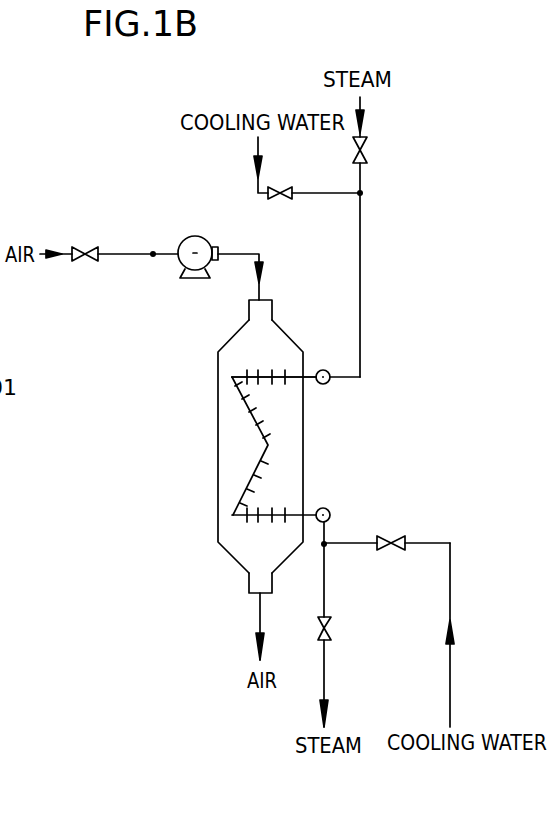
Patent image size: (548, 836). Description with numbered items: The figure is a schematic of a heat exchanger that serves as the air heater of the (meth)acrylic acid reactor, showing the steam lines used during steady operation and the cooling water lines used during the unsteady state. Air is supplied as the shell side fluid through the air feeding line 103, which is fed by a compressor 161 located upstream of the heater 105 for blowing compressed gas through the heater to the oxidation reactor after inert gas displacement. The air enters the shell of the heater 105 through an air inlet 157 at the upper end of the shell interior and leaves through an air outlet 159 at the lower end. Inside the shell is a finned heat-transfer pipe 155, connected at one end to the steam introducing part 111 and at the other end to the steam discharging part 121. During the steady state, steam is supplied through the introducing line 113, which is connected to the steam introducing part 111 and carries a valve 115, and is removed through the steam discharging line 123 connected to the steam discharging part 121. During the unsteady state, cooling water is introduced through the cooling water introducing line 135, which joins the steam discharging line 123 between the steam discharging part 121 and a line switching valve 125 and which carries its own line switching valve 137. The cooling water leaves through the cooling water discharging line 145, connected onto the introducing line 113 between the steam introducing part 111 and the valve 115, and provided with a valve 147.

The air feeding line 103 is at (262, 266).
The heater 105 is at (218, 365).
The steam introducing part 111 is at (325, 385).
The introducing line 113 is at (366, 183).
The valve 115 is at (369, 152).
The steam discharging part 121 is at (324, 507).
The steam discharging line 123 is at (328, 591).
The line switching valve 125 is at (333, 628).
The cooling water introducing line 135 is at (452, 675).
The line switching valve 137 is at (389, 536).
The cooling water discharging line 145 is at (257, 155).
The valve 147 is at (283, 187).
The finned heat-transfer pipe 155 is at (277, 515).
The air inlet 157 is at (248, 316).
The air outlet 159 is at (249, 583).
The compressor 161 is at (197, 240).